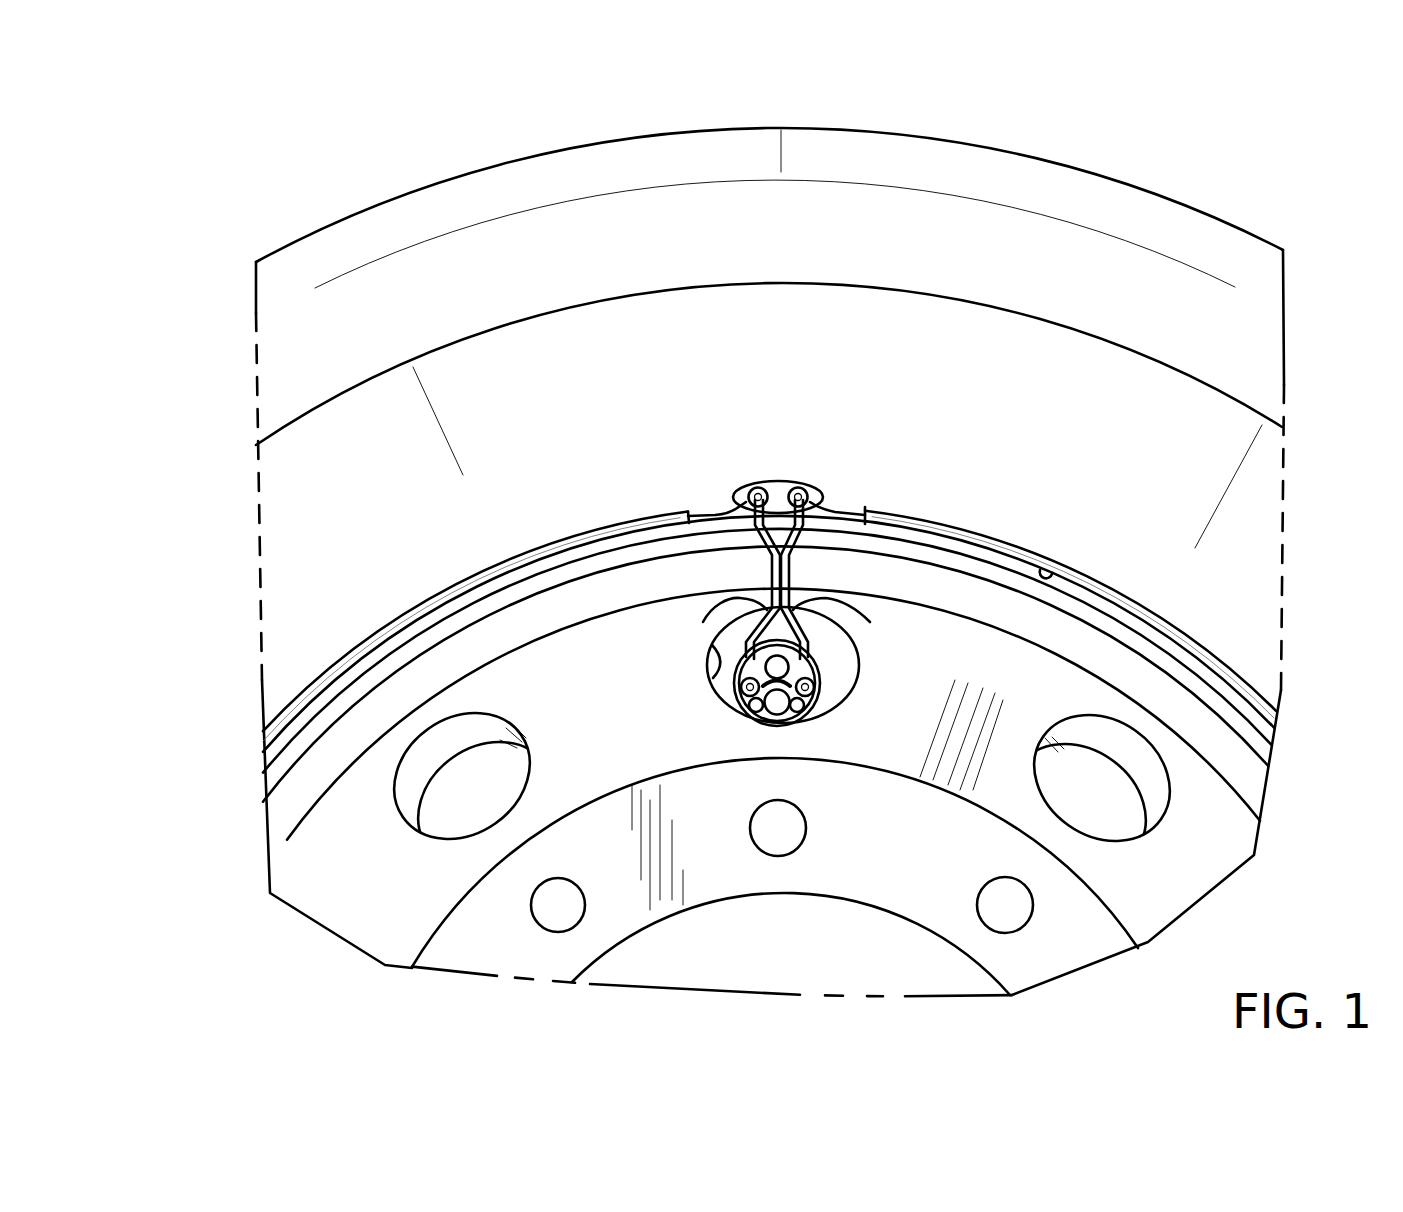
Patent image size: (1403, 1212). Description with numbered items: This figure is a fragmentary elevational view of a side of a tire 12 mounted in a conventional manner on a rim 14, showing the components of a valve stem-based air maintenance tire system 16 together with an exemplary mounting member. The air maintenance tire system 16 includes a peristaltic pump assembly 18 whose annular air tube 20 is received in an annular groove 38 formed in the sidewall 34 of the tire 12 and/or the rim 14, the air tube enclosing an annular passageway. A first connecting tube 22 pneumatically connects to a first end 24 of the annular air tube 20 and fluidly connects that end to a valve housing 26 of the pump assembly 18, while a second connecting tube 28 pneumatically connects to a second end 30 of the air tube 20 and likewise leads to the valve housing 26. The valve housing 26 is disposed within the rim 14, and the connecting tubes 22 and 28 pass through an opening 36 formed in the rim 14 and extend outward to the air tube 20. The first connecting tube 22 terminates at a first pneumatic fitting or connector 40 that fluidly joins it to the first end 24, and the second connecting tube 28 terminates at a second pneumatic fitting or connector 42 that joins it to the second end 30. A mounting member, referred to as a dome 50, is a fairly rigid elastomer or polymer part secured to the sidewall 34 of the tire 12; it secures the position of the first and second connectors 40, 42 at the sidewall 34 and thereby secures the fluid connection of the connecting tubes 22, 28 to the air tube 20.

The tire 12 is at (1213, 199).
The rim 14 is at (1205, 705).
The air maintenance tire system 16 is at (853, 487).
The peristaltic pump assembly 18 is at (939, 501).
The annular air tube 20 is at (1013, 537).
The first connecting tube 22 is at (830, 605).
The first end of the annular air tube 24 is at (873, 519).
The valve housing 26 is at (825, 716).
The second connecting tube 28 is at (745, 597).
The second end of the annular air tube 30 is at (572, 536).
The sidewall 34 is at (292, 556).
The opening 36 is at (722, 655).
The annular groove 38 is at (1054, 575).
The first pneumatic fitting or connector 40 is at (803, 492).
The second pneumatic fitting or connector 42 is at (748, 492).
The dome 50 is at (784, 474).